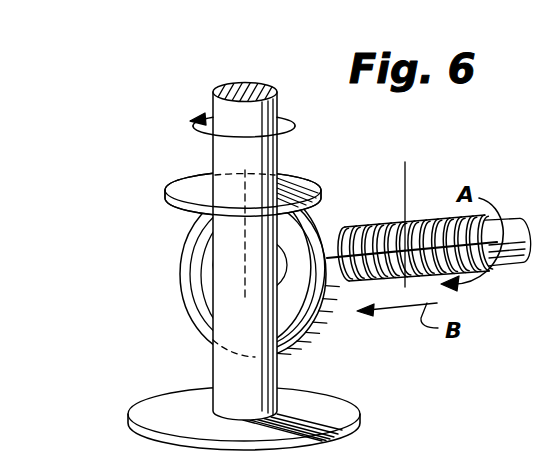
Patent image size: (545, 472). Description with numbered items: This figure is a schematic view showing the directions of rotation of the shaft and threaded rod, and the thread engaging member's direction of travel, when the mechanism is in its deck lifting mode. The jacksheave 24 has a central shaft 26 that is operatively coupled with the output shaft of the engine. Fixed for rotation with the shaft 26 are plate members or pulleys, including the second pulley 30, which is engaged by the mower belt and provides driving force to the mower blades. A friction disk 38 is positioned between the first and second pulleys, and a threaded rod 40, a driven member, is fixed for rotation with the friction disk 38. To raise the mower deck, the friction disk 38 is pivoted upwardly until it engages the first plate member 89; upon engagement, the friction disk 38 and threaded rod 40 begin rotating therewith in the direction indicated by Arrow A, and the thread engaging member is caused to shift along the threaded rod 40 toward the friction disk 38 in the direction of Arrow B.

The jacksheave 24 is at (249, 255).
The central shaft 26 is at (235, 242).
The second pulley 30 is at (157, 408).
The friction disk 38 is at (333, 213).
The threaded rod 40 is at (427, 227).
The first plate member 89 is at (178, 179).